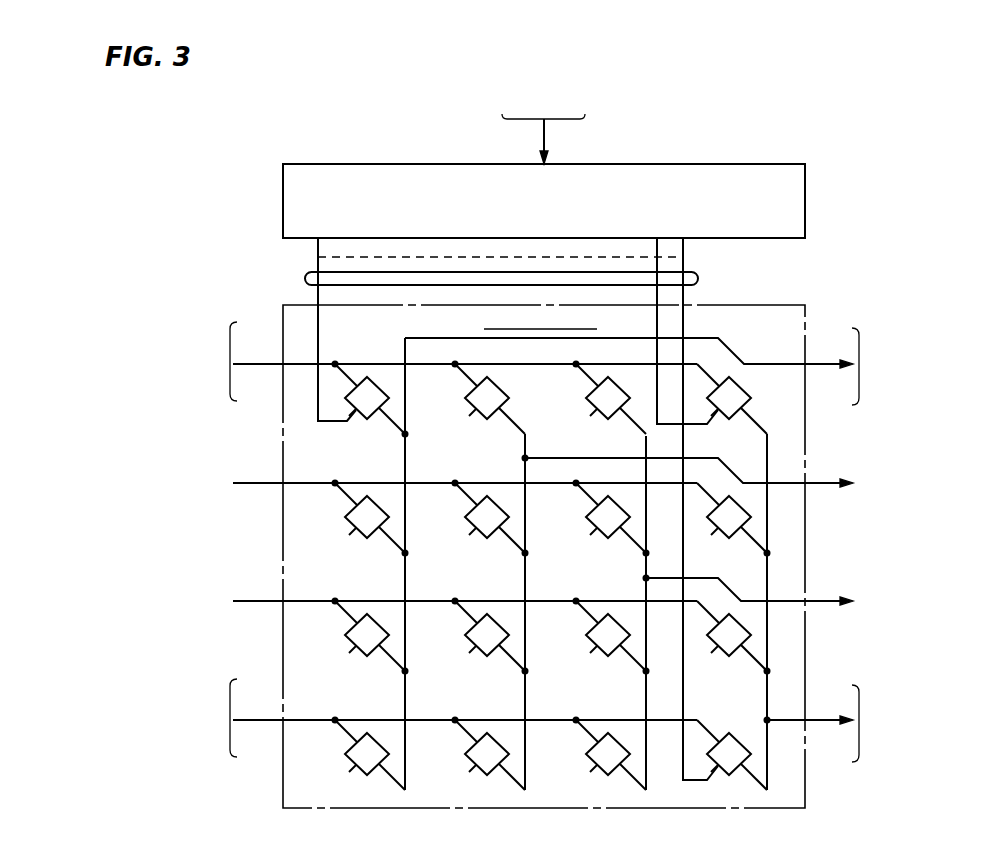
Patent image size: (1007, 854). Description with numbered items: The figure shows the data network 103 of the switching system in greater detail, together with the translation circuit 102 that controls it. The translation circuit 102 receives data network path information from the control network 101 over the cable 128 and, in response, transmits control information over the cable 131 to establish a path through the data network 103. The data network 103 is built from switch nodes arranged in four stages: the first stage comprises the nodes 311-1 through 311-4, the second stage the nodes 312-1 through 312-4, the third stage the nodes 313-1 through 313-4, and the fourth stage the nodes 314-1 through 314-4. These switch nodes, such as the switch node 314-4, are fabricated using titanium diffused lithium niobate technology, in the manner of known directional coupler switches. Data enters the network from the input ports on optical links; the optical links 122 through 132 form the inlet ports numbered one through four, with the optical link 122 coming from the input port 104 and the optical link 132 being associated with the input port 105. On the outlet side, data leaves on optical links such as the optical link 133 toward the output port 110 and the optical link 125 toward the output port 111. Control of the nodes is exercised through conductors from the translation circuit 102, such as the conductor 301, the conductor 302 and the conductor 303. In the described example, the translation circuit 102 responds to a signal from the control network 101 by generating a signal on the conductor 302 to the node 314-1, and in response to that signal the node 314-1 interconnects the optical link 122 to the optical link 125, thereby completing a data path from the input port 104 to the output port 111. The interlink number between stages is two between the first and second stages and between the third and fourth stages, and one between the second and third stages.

The control network 101 is at (545, 88).
The translation circuit 102 is at (664, 164).
The data network 103 is at (790, 305).
The input port 104 is at (180, 361).
The input port 105 is at (180, 718).
The output port 110 is at (911, 366).
The output port 111 is at (911, 723).
The optical link 122 is at (259, 360).
The optical link 125 is at (830, 719).
The cable 128 is at (532, 140).
The cable 131 is at (305, 279).
The optical link 132 is at (256, 716).
The output data line 133 is at (830, 363).
The control lead 0 301 is at (318, 257).
The conductor 302 is at (683, 257).
The control lead 303 is at (684, 271).
The node 311-1 is at (368, 421).
The node 312-1 is at (488, 421).
The node 313-1 is at (609, 421).
The node 314-1 is at (730, 421).
The node 311-4 is at (368, 777).
The node 312-4 is at (488, 777).
The node 313-4 is at (609, 777).
The switch node 314-4 is at (730, 777).